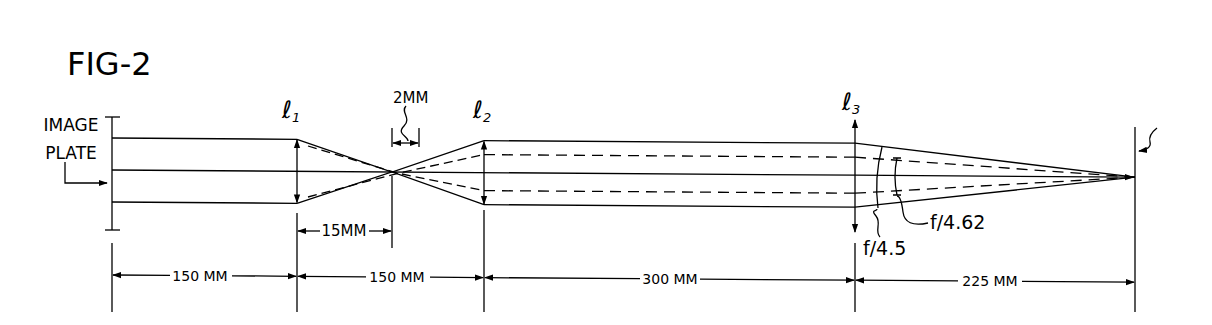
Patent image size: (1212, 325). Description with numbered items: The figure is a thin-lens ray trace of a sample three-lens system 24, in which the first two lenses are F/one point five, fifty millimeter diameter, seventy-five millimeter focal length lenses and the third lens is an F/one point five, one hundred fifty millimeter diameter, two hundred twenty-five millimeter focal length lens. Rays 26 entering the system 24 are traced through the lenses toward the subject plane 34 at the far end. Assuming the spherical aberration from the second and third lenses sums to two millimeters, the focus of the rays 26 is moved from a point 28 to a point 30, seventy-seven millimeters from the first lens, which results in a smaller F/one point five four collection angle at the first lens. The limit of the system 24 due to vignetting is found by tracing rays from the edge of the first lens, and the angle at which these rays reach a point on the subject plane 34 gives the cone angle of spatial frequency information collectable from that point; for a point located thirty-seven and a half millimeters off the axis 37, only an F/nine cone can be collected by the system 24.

The three-lens system 24 is at (580, 131).
The rays 26 is at (944, 153).
The point 28 is at (394, 177).
The point 30 is at (401, 174).
The subject plane 34 is at (1136, 243).
The axis 37 is at (1012, 176).